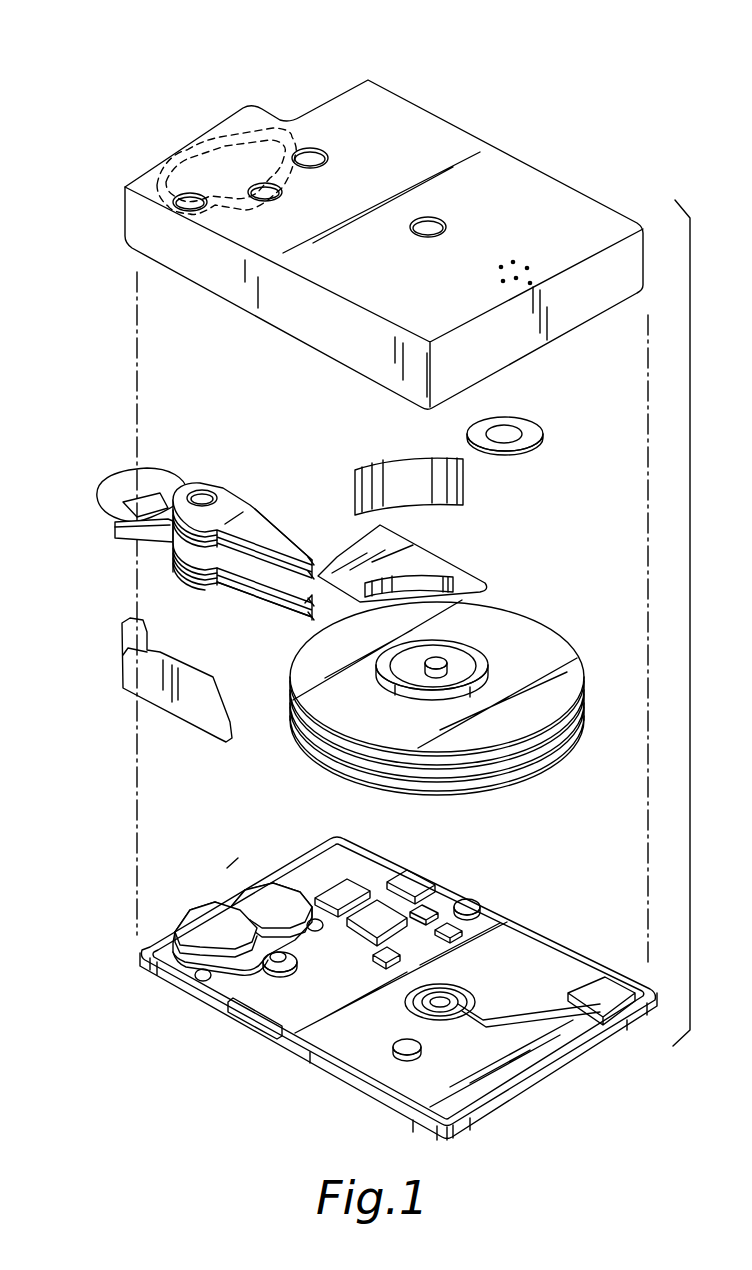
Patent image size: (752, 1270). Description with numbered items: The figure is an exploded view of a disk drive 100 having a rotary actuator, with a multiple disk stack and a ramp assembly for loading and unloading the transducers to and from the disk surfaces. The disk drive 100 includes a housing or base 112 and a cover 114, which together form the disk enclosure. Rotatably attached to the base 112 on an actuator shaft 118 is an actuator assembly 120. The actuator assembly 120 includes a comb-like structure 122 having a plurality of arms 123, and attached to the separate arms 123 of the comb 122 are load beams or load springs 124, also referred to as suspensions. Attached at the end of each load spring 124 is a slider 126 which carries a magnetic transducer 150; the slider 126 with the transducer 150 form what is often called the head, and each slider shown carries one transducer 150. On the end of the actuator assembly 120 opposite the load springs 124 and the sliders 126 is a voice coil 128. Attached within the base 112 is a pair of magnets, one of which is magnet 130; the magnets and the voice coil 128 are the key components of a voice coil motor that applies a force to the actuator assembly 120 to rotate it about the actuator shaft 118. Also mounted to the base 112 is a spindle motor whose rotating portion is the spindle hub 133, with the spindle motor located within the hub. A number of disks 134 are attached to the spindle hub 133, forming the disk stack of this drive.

The disk drive 100 is at (514, 52).
The base 112 is at (555, 960).
The cover 114 is at (538, 190).
The actuator shaft 118 is at (202, 497).
The actuator assembly 120 is at (150, 543).
The comb-like structure 122 is at (227, 596).
The arms 123 is at (253, 505).
The load beams or load springs 124 is at (270, 537).
The slider 126 is at (311, 563).
The voice coil 128 is at (115, 497).
The magnet 130 is at (233, 135).
The spindle hub 133 is at (443, 658).
The disks 134 is at (550, 648).
The magnetic transducer 150 is at (330, 562).